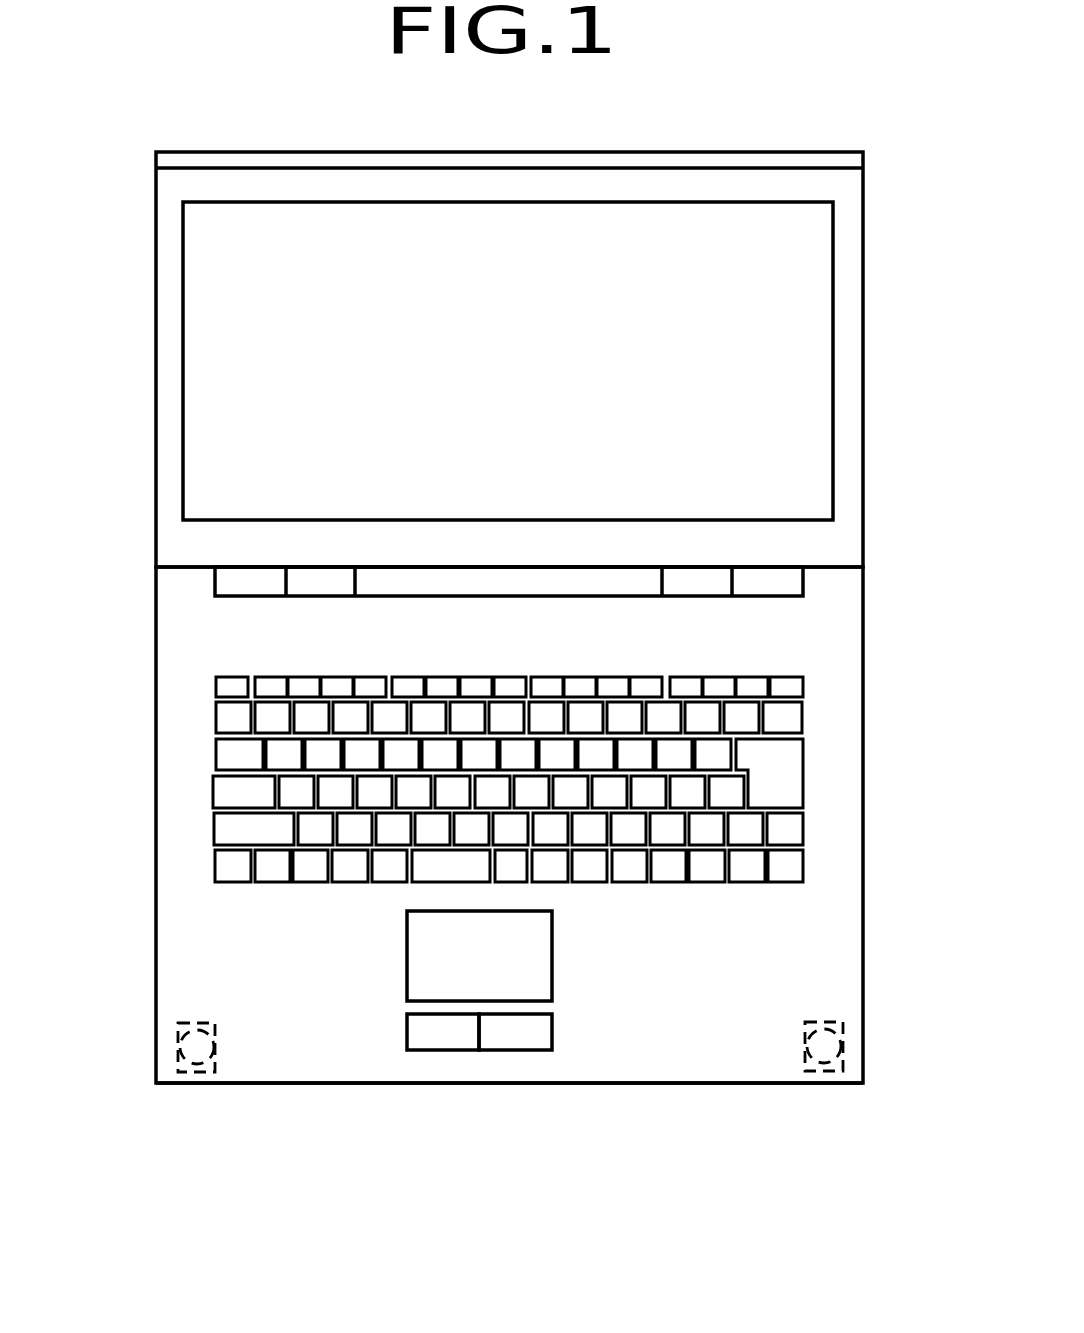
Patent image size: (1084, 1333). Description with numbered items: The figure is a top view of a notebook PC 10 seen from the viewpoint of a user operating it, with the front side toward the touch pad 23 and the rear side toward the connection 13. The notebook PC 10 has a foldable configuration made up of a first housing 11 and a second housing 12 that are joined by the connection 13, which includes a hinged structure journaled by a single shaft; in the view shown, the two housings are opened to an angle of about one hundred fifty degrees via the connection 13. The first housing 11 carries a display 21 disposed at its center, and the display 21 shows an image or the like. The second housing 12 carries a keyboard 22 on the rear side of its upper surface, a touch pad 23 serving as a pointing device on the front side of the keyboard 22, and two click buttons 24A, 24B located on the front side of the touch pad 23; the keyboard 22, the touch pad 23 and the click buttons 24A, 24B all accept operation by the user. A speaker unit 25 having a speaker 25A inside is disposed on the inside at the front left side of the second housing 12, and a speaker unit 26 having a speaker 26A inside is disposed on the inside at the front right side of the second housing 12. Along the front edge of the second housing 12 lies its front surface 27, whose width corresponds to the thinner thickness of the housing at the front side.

The notebook PC 10 is at (593, 1160).
The first housing 11 is at (863, 322).
The second housing 12 is at (863, 712).
The connection 13 is at (687, 585).
The display 21 is at (833, 458).
The keyboard 22 is at (803, 778).
The touch pad 23 is at (552, 954).
The click button 24A is at (443, 1050).
The click button 24B is at (517, 1050).
The speaker unit 25 is at (178, 1066).
The speaker 25A is at (180, 1030).
The speaker unit 26 is at (840, 1068).
The speaker 26A is at (825, 1032).
The front surface 27 is at (713, 1083).